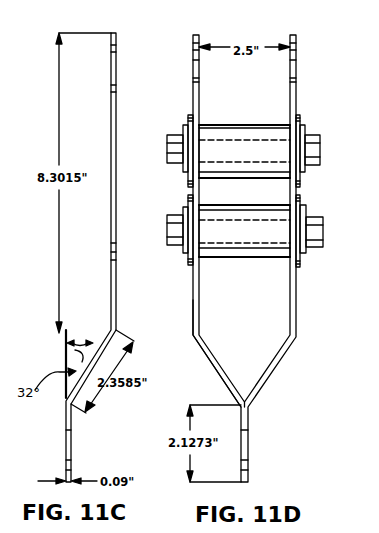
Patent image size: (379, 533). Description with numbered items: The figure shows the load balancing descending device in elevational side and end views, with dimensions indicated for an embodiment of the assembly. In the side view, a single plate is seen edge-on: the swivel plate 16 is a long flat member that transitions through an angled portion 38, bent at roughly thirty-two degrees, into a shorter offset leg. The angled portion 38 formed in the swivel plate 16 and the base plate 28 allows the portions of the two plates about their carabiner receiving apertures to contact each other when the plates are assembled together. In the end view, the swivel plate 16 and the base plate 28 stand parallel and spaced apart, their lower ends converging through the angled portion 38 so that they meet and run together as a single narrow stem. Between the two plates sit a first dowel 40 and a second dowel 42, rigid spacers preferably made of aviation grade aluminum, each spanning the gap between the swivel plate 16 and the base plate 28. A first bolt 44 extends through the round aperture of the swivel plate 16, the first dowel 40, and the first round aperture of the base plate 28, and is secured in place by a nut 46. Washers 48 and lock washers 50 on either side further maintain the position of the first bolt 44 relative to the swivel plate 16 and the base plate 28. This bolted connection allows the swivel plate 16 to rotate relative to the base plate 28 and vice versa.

In FIG. 11C, the swivel plate 16 is at (111, 56).
In FIG. 11D, the swivel plate 16 is at (296, 308).
In FIG. 11D, the base plate 28 is at (199, 322).
In FIG. 11C, the angled portion 38 is at (111, 329).
In FIG. 11D, the first dowel 40 is at (241, 124).
In FIG. 11D, the second dowel 42 is at (238, 258).
In FIG. 11D, the first bolt 44 is at (300, 222).
In FIG. 11D, the nut 46 is at (167, 150).
In FIG. 11D, the washers 48 is at (190, 119).
In FIG. 11D, the lock washers 50 is at (186, 168).